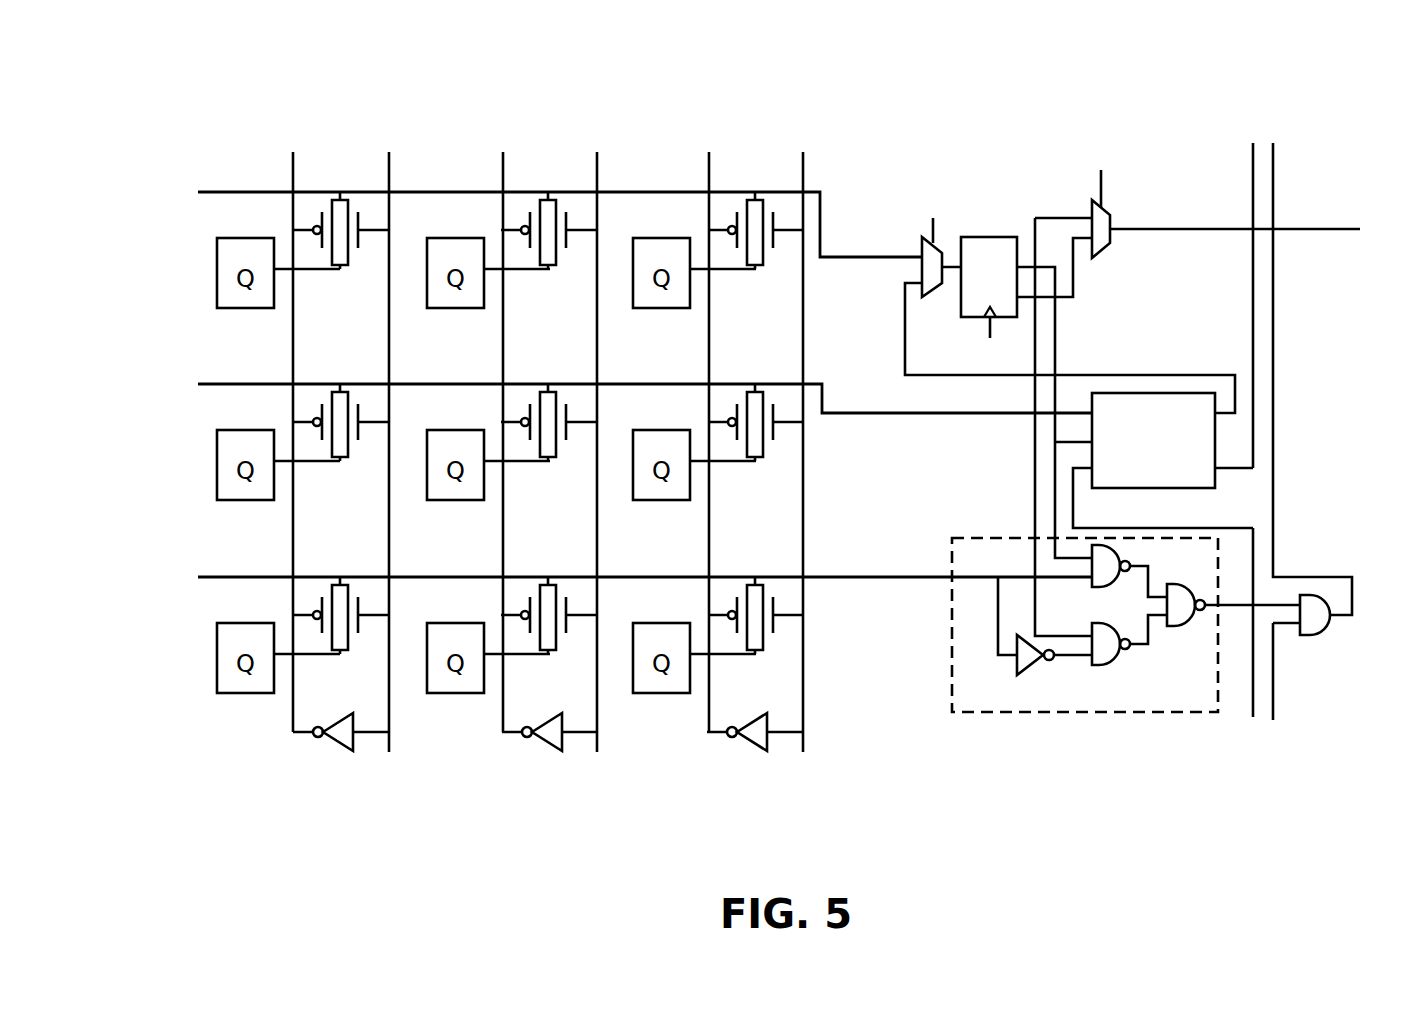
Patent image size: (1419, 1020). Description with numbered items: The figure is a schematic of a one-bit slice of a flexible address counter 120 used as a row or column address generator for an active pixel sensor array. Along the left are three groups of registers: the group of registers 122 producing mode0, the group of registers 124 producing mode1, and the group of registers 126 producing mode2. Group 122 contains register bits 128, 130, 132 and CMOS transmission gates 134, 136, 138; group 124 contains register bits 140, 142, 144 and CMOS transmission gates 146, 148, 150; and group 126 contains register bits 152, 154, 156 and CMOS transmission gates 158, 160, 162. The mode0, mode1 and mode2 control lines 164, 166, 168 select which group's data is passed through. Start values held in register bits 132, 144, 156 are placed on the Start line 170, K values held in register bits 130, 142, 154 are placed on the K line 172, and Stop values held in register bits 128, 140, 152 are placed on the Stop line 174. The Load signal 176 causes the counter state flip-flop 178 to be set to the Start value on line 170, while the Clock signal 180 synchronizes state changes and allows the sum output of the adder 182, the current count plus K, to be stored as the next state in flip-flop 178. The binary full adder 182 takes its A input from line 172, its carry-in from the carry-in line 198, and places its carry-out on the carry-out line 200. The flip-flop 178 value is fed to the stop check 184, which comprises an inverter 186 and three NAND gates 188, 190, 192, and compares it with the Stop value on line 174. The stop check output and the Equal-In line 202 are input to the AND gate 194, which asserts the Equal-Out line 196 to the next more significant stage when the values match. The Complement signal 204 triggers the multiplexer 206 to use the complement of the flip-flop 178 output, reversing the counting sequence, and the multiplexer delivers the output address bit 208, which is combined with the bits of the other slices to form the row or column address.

The flexible address counter 120 is at (404, 109).
The group of registers 122 is at (718, 452).
The group of registers 124 is at (512, 452).
The group of registers 126 is at (303, 452).
The register bit 128 is at (665, 697).
The register bit 130 is at (672, 503).
The register bit 132 is at (682, 312).
The CMOS transmission gate 134 is at (760, 642).
The CMOS transmission gate 136 is at (760, 448).
The CMOS transmission gate 138 is at (760, 256).
The register bit 140 is at (470, 697).
The register bit 142 is at (478, 503).
The register bit 144 is at (478, 312).
The CMOS transmission gate 146 is at (553, 642).
The CMOS transmission gate 148 is at (553, 448).
The CMOS transmission gate 150 is at (553, 256).
The register bit 152 is at (258, 697).
The register bit 154 is at (265, 503).
The register bit 156 is at (250, 312).
The CMOS transmission gate 158 is at (345, 642).
The CMOS transmission gate 160 is at (345, 448).
The CMOS transmission gate 162 is at (343, 256).
The mode0 control line 164 is at (788, 786).
The mode1 control line 166 is at (600, 786).
The mode2 control line 168 is at (385, 787).
The Start line 170 is at (214, 194).
The K line 172 is at (214, 386).
The Stop line 174 is at (214, 580).
The Load signal 176 is at (932, 178).
The counter state flip-flop 178 is at (994, 236).
The Clock signal 180 is at (985, 327).
The adder 182 is at (1138, 392).
The stop check 184 is at (1126, 669).
The inverter 186 is at (1018, 664).
The NAND gate 188 is at (1112, 664).
The NAND gate 190 is at (1103, 583).
The NAND gate 192 is at (1175, 628).
The AND gate 194 is at (1322, 636).
The Equal-Out line 196 is at (1275, 183).
The carry-in line 198 is at (1248, 716).
The carry-out line 200 is at (1252, 187).
The Equal-In line 202 is at (1275, 697).
The Complement signal 204 is at (1103, 141).
The multiplexer 206 is at (1112, 241).
The output address bit 208 is at (1345, 230).